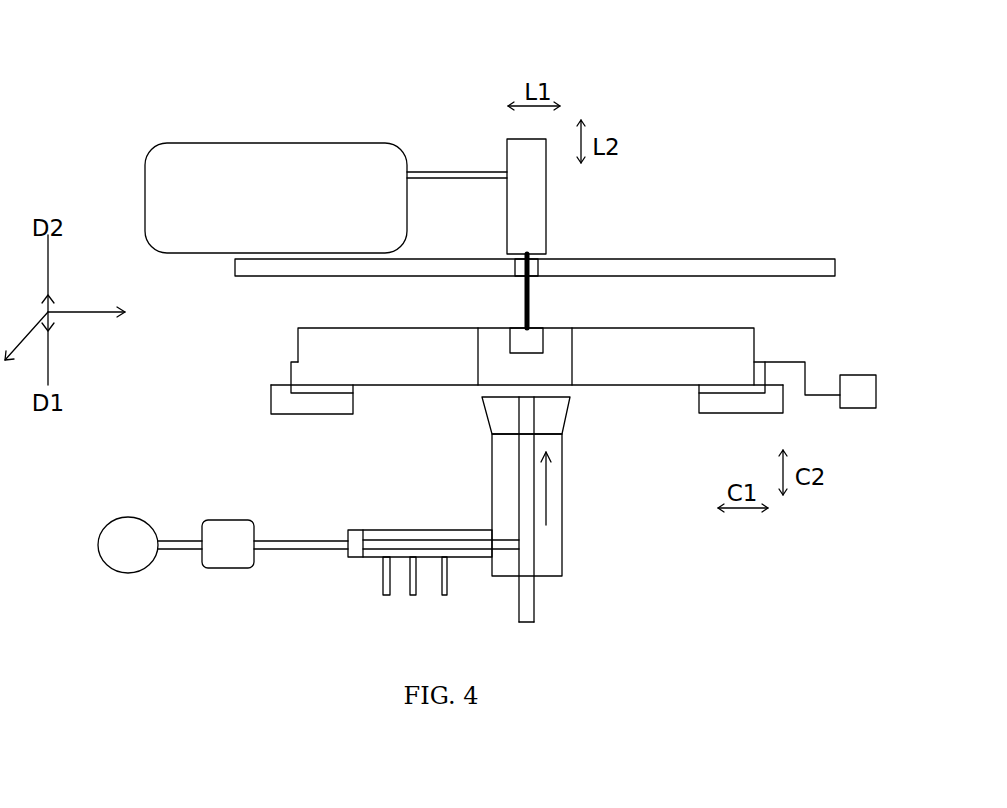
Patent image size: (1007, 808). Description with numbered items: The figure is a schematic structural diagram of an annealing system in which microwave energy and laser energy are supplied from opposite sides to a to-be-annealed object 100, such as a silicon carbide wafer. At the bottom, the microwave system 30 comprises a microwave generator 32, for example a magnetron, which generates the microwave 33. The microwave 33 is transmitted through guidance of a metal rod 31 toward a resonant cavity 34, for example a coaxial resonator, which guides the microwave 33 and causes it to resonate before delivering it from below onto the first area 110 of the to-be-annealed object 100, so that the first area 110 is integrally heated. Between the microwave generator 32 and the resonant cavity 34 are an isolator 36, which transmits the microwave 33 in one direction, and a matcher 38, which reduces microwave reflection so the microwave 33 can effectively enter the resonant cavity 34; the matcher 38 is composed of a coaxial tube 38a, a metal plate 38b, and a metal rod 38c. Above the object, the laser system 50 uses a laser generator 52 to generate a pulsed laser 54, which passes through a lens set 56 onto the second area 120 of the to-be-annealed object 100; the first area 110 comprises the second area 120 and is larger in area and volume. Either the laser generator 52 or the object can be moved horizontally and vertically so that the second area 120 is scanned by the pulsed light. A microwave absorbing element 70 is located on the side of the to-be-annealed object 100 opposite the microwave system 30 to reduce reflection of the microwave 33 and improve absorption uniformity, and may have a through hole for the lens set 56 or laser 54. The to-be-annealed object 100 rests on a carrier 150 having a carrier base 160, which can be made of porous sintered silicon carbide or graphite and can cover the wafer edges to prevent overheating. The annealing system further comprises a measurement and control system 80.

The microwave system 30 is at (353, 518).
The metal rod 31 is at (190, 545).
The microwave generator 32 is at (115, 527).
The microwave 33 is at (547, 486).
The resonant cavity 34 is at (555, 441).
The isolator 36 is at (222, 530).
The matcher 38 is at (405, 554).
The coaxial tube 38a is at (450, 530).
The metal plate 38b is at (357, 560).
The metal rod 38c is at (413, 580).
The laser system 50 is at (387, 174).
The laser generator 52 is at (248, 155).
The laser 54 is at (535, 273).
The lens set 56 is at (512, 148).
The microwave absorbing element 70 is at (803, 265).
The measurement and control system 80 is at (855, 385).
The to-be-annealed object 100 is at (523, 367).
The first area 110 is at (556, 337).
The second area 120 is at (518, 335).
The carrier 150 is at (283, 407).
The carrier base 160 is at (290, 367).